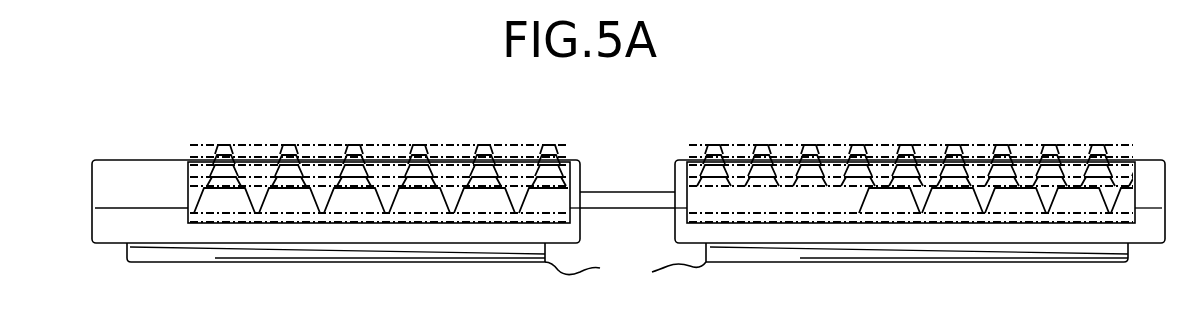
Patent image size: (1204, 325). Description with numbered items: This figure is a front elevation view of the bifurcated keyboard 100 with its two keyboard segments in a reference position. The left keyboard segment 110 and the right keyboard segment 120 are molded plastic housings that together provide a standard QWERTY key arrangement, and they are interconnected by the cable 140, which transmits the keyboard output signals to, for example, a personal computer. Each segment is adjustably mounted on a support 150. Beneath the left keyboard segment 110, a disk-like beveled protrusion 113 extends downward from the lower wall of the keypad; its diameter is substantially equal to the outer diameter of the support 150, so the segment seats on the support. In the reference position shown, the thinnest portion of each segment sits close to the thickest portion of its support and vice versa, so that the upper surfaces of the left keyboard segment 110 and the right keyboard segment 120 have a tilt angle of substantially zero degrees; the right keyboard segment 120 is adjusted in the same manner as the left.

The bifurcated keyboard 100 is at (890, 302).
The left keyboard segment 110 is at (583, 160).
The beveled protrusion 113 is at (433, 243).
The right keyboard segment 120 is at (1148, 160).
The cable 140 is at (627, 192).
The support 150 is at (625, 275).